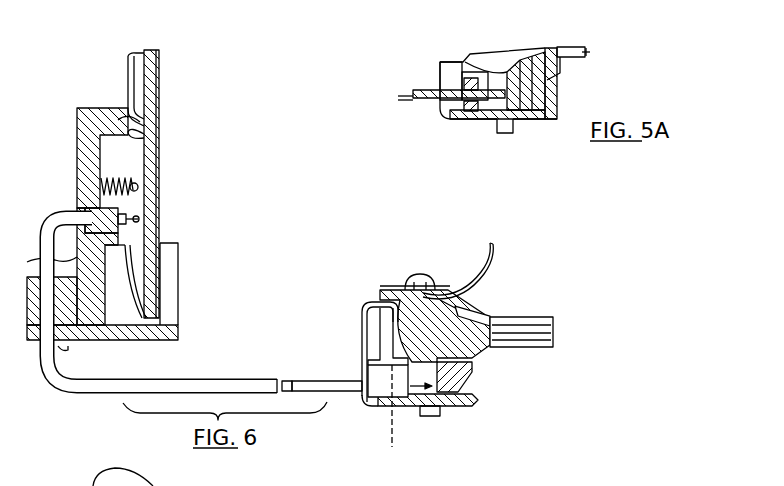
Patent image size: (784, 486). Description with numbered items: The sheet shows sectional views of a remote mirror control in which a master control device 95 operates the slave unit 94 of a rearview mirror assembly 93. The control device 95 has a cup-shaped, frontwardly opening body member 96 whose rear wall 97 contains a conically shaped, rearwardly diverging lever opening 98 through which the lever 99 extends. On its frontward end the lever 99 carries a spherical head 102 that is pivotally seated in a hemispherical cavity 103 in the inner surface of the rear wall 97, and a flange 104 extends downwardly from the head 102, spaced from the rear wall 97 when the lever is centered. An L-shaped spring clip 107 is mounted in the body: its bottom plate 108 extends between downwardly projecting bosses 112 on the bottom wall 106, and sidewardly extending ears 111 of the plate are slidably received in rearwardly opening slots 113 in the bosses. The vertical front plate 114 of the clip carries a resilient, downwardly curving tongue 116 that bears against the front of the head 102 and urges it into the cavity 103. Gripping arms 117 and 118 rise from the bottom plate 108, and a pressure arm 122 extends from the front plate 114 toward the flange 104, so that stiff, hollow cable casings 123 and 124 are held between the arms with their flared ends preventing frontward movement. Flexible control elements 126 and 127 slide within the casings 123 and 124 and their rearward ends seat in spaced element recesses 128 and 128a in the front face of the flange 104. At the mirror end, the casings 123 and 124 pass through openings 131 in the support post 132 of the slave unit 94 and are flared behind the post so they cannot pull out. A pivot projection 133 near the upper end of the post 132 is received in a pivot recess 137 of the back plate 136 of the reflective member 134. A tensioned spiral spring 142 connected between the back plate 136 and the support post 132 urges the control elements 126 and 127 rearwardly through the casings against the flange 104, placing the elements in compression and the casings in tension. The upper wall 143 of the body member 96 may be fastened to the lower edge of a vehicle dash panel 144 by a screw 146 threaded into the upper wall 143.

In FIG. 6, the rearview mirror assembly 93 is at (197, 104).
In FIG. 6, the slave unit 94 is at (60, 173).
In FIG. 6, the control device 95 is at (513, 288).
In FIG. 6, the body member 96 is at (465, 413).
In FIG. 5A, the body member 96 is at (547, 118).
In FIG. 6, the rear wall 97 is at (455, 312).
In FIG. 6, the lever opening 98 is at (462, 340).
In FIG. 6, the lever 99 is at (535, 327).
In FIG. 5A, the lever 99 is at (575, 46).
In FIG. 6, the spherical head 102 is at (455, 302).
In FIG. 5A, the spherical head 102 is at (507, 62).
In FIG. 6, the hemispherical cavity 103 is at (458, 366).
In FIG. 6, the flange 104 is at (430, 368).
In FIG. 5A, the flange 104 is at (506, 72).
In FIG. 6, the bottom wall 106 is at (463, 408).
In FIG. 5A, the bottom wall 106 is at (462, 117).
In FIG. 6, the spring clip 107 is at (360, 305).
In FIG. 5A, the spring clip 107 is at (438, 70).
In FIG. 6, the bottom plate 108 is at (392, 432).
In FIG. 5A, the bottom plate 108 is at (484, 117).
In FIG. 5A, the ear 111 is at (523, 128).
In FIG. 6, the boss 112 is at (432, 420).
In FIG. 5A, the slot 113 is at (495, 116).
In FIG. 6, the front plate 114 is at (362, 328).
In FIG. 6, the tongue 116 is at (400, 343).
In FIG. 5A, the gripping arm 117 is at (471, 77).
In FIG. 6, the gripping arm 118 is at (378, 405).
In FIG. 6, the pressure arm 122 is at (368, 394).
In FIG. 5A, the pressure arm 122 is at (449, 78).
In FIG. 5A, the cable casing 123 is at (432, 103).
In FIG. 6, the cable casing 124 is at (338, 383).
In FIG. 5A, the control element 126 is at (405, 102).
In FIG. 6, the control element 127 is at (288, 383).
In FIG. 5A, the element recess 128 is at (507, 90).
In FIG. 6, the element recess 128a is at (450, 407).
In FIG. 6, the opening 131 is at (62, 216).
In FIG. 6, the support post 132 is at (88, 154).
In FIG. 6, the pivot projection 133 is at (128, 120).
In FIG. 6, the reflective member 134 is at (160, 75).
In FIG. 6, the back plate 136 is at (132, 80).
In FIG. 6, the pivot recess 137 is at (132, 134).
In FIG. 6, the spiral spring 142 is at (90, 206).
In FIG. 6, the upper wall 143 is at (428, 291).
In FIG. 6, the dash panel 144 is at (487, 249).
In FIG. 6, the screw 146 is at (410, 290).